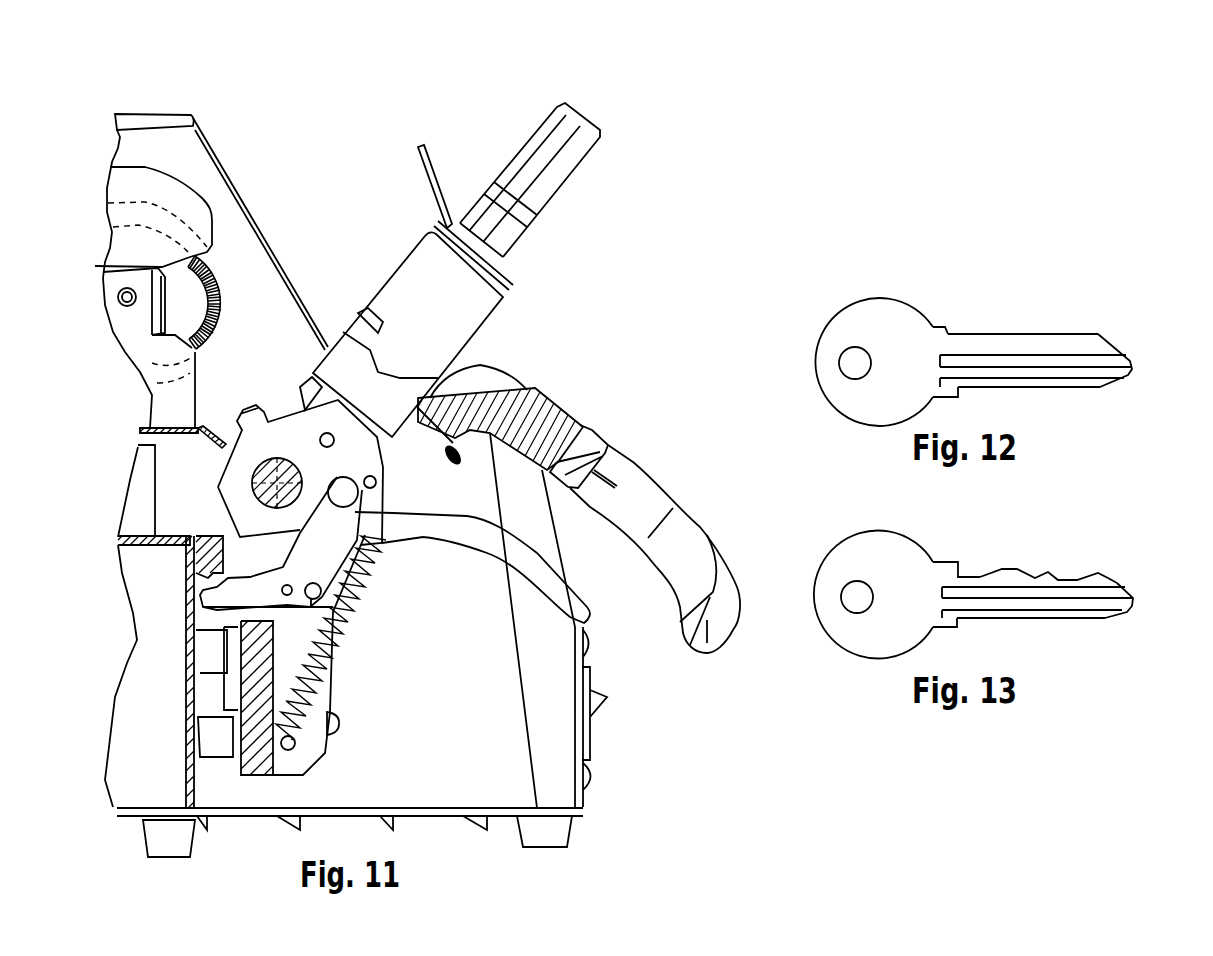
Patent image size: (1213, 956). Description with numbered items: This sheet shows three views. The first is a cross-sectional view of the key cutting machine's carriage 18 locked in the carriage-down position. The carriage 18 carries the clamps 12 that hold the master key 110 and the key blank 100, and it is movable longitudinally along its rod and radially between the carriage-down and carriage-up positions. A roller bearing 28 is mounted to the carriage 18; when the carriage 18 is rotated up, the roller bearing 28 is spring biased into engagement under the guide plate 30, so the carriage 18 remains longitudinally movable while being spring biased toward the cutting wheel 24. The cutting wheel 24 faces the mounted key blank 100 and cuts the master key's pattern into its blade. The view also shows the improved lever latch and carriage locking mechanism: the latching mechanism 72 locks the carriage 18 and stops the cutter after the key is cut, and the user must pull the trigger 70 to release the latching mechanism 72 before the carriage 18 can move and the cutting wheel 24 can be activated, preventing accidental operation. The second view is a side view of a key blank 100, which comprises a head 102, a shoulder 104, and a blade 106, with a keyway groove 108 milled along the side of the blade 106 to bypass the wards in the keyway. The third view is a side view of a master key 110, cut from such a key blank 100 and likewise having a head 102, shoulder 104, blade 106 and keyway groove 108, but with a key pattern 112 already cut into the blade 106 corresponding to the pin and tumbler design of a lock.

In FIG. 11, the vise grips or clamps 12 is at (380, 286).
In FIG. 11, the carriage 18 is at (412, 453).
In FIG. 11, the cutting wheel 24 is at (222, 287).
In FIG. 11, the roller bearing 28 is at (263, 418).
In FIG. 11, the guide plate 30 is at (202, 436).
In FIG. 11, the trigger 70 is at (503, 567).
In FIG. 11, the latching mechanism 72 is at (203, 590).
In FIG. 12, the key blank 100 is at (994, 356).
In FIG. 12, the head 102 is at (822, 393).
In FIG. 13, the head 102 is at (835, 643).
In FIG. 12, the shoulder 104 is at (950, 328).
In FIG. 13, the shoulder 104 is at (948, 630).
In FIG. 12, the blade 106 is at (1063, 338).
In FIG. 13, the blade 106 is at (1040, 618).
In FIG. 12, the keyway groove 108 is at (1113, 357).
In FIG. 13, the keyway groove 108 is at (1113, 590).
In FIG. 13, the master key 110 is at (1001, 604).
In FIG. 13, the key pattern 112 is at (1073, 575).